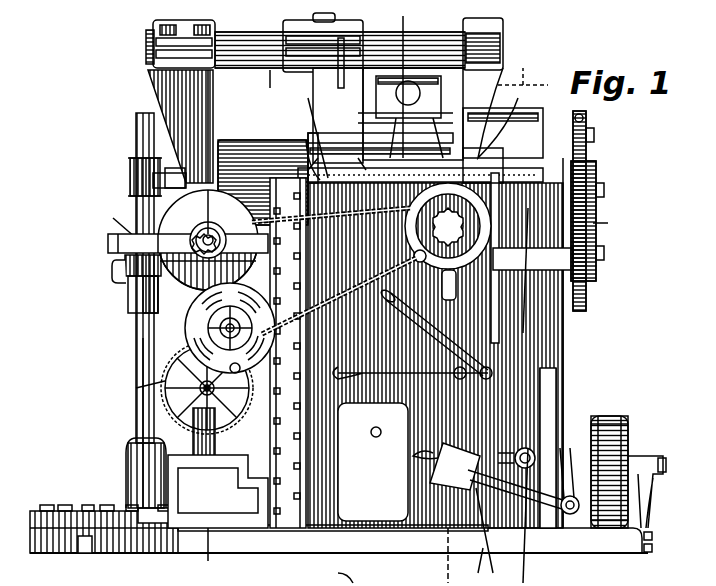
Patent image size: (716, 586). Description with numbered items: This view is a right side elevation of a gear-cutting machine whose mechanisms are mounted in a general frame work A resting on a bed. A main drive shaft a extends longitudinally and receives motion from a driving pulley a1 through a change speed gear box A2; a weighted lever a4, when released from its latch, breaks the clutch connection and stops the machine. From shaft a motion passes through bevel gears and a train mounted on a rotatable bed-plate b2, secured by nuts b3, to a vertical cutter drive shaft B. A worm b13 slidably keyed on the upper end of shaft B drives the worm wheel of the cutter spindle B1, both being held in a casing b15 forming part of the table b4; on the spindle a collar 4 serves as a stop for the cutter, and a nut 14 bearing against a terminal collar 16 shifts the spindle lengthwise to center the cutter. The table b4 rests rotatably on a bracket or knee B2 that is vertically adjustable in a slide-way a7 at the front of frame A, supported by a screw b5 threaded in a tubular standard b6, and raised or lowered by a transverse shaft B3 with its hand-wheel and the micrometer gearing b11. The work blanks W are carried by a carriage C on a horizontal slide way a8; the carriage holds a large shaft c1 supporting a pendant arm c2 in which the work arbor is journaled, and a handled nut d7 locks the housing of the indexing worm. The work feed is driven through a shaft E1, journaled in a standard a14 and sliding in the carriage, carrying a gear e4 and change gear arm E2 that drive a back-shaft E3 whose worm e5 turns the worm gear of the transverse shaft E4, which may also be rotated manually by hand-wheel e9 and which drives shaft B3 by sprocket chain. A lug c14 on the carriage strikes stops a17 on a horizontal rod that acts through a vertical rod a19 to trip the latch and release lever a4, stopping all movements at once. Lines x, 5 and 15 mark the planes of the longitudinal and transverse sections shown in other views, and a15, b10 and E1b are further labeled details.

The general frame work A is at (510, 343).
The change speed gear box A2 is at (548, 540).
The main drive shaft a is at (578, 450).
The driving pulley a1 is at (615, 405).
The weighted lever a4 is at (413, 384).
The slide-way a7 is at (325, 250).
The horizontal slide way a8 is at (298, 135).
The standard a14 is at (520, 125).
The stud a15 is at (390, 128).
The stops a17 is at (307, 133).
The vertically disposed rod a19 is at (520, 312).
The cutter drive shaft B is at (150, 336).
The cutter spindle B1 is at (169, 240).
The bracket or knee B2 is at (132, 392).
The micrometer shaft B3 is at (230, 328).
The bed-plate b2 is at (88, 510).
The nuts b3 is at (48, 497).
The table b4 is at (334, 271).
The screw b5 is at (152, 380).
The tubular standard b6 is at (190, 435).
The arm b10 is at (112, 221).
The gearing b11 is at (160, 390).
The worm b13 is at (100, 236).
The casing b15 is at (203, 212).
The carriage C is at (340, 48).
The shaft c1 is at (480, 32).
The pendant arm c2 is at (160, 110).
The lug or ear c14 is at (429, 128).
The handled nut d7 is at (505, 66).
The feed shaft E1 is at (368, 125).
The gear nut E1b is at (586, 128).
The change gear arm E2 is at (606, 222).
The back-shaft E3 is at (596, 245).
The transverse shaft E4 is at (588, 178).
The gear e4 is at (580, 108).
The worm e5 is at (532, 517).
The hand-wheel e9 is at (596, 183).
The blanks W is at (215, 135).
The section line x— x is at (342, 572).
The collar 4 is at (425, 560).
The section line 5— 5 is at (194, 561).
The nut 14 is at (108, 272).
The section line 15— 15 is at (519, 70).
The terminal collar 16 is at (266, 68).